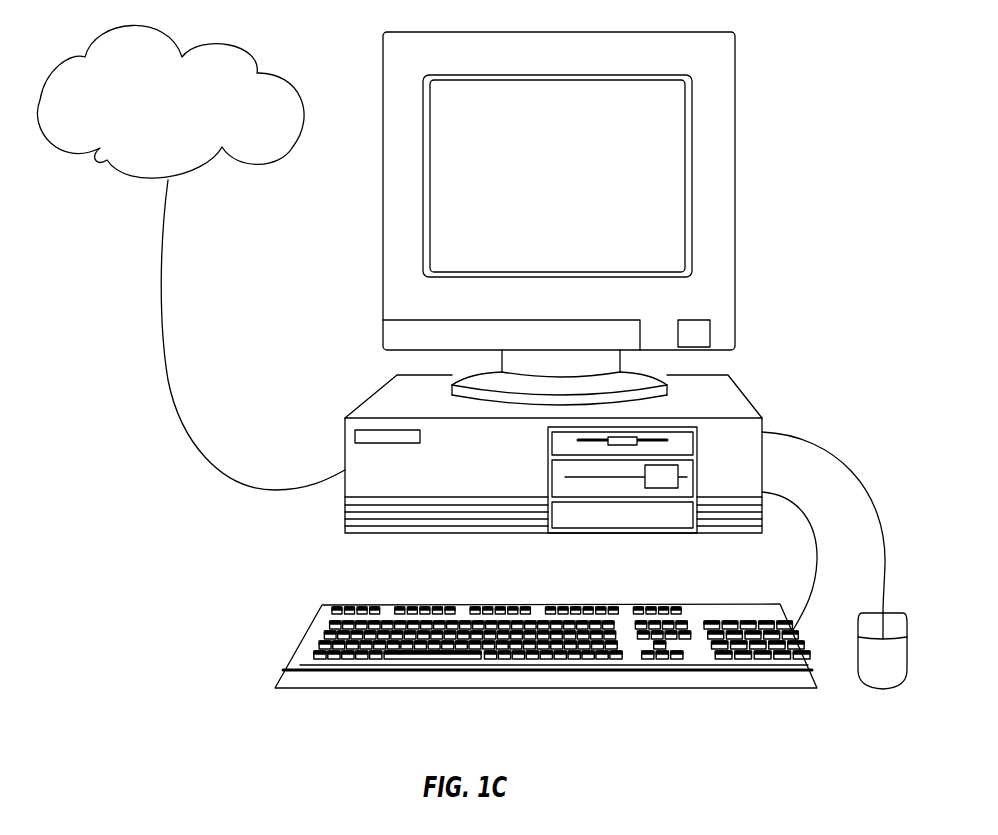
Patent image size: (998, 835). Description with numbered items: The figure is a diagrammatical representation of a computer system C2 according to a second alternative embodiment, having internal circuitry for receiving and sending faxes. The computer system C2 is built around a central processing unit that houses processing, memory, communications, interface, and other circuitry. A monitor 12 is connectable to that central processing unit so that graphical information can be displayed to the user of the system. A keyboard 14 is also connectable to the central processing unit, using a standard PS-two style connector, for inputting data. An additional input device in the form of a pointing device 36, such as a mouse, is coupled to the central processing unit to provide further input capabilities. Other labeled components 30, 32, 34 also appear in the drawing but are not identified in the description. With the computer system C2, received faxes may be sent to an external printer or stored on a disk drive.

The monitor 12 is at (103, 172).
The keyboard 14 is at (160, 270).
The computer processing unit 30 is at (353, 533).
The monitor 32 is at (735, 247).
The keyboard 34 is at (352, 688).
The pointing device 36 is at (907, 660).
The computer system C2 is at (839, 86).